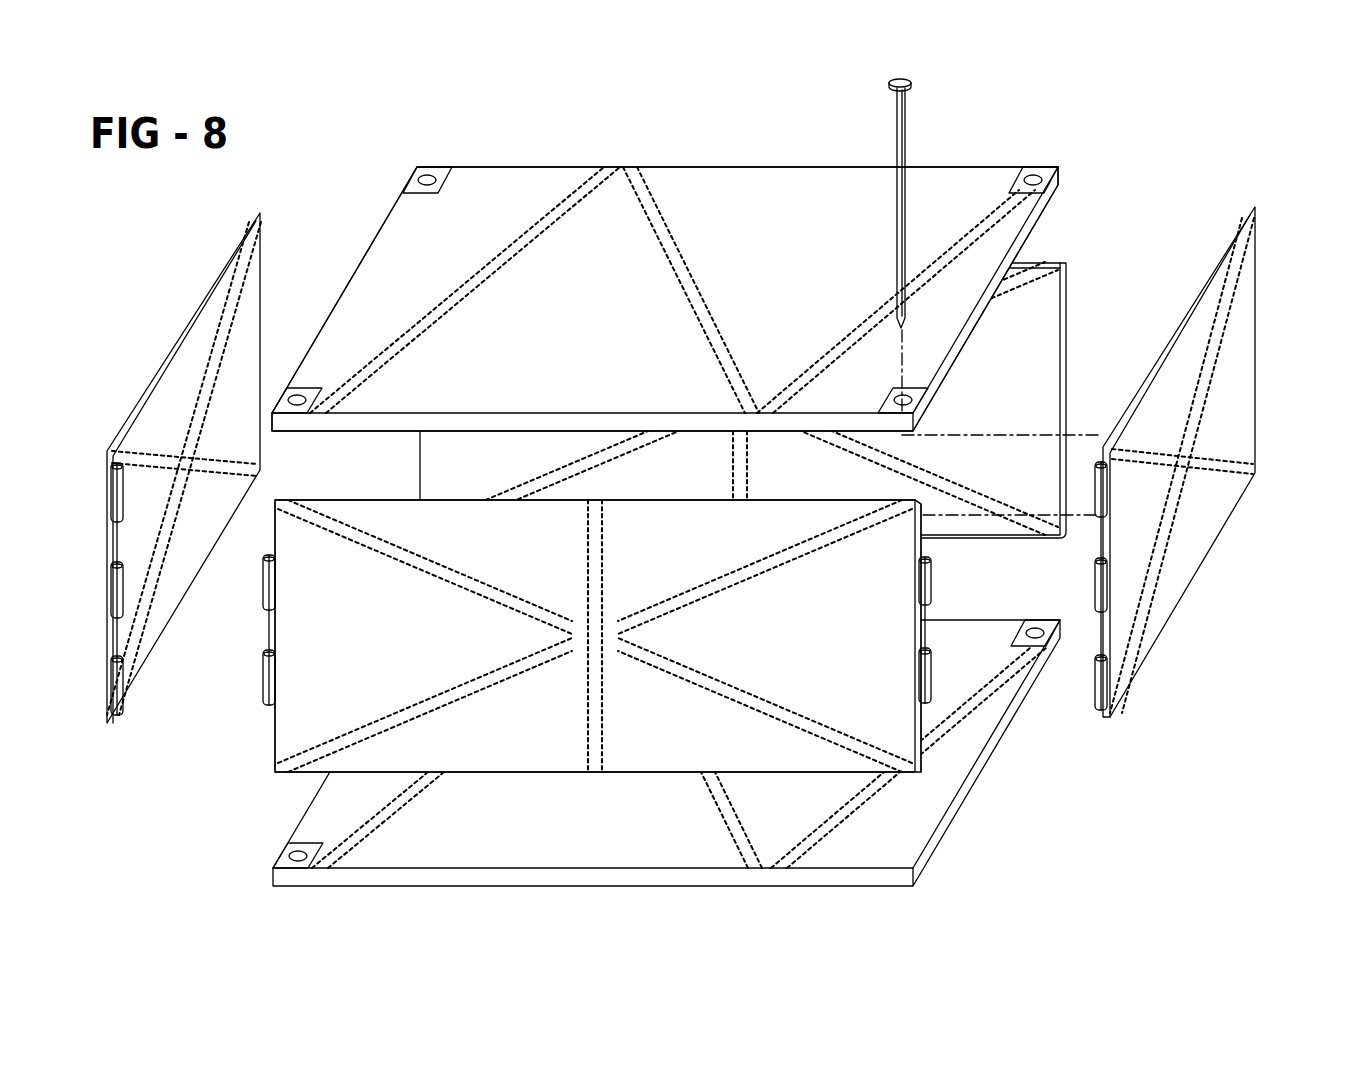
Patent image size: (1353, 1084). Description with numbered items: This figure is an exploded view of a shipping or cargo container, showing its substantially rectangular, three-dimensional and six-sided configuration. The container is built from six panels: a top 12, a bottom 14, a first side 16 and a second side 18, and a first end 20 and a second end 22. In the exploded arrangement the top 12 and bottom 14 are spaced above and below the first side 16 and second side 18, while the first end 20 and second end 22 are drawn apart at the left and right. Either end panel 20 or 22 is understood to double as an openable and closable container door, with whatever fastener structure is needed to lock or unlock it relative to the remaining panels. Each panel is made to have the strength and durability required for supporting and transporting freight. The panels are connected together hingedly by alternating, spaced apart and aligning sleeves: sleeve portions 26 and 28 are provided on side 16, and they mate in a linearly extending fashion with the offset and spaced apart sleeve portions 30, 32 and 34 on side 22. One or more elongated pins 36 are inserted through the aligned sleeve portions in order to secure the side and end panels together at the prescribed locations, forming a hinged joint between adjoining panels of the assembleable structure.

The top 12 is at (787, 200).
The bottom 14 is at (788, 810).
The first side 16 is at (300, 715).
The second side 18 is at (1043, 265).
The first end 20 is at (158, 369).
The second end 22 is at (1238, 392).
The sleeve portion 26 is at (925, 590).
The sleeve portion 28 is at (925, 683).
The sleeve portion 30 is at (1107, 484).
The sleeve portion 32 is at (1107, 582).
The sleeve portion 34 is at (1107, 687).
The elongated pin 36 is at (906, 138).